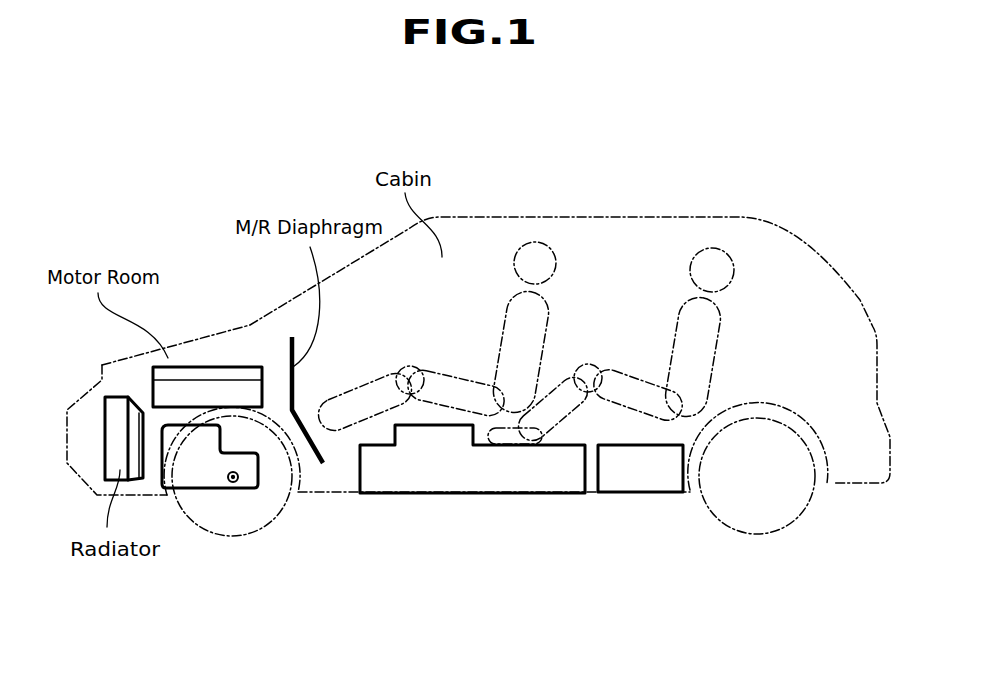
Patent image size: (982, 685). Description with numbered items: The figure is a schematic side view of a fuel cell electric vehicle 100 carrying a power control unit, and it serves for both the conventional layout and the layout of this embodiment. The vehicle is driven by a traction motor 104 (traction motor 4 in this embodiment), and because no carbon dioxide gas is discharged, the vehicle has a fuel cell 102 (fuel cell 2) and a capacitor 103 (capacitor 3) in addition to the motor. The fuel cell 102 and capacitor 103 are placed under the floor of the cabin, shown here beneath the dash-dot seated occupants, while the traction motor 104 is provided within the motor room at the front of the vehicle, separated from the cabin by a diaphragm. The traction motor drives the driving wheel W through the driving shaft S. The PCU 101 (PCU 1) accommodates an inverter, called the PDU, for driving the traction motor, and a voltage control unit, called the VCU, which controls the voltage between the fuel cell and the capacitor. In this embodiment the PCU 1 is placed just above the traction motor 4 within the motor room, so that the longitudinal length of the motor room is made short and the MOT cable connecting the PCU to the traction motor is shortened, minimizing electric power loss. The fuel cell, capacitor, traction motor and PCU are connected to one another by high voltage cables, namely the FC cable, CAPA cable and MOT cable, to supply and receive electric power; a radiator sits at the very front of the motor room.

The fuel cell electric vehicle 100 is at (595, 217).
The PCU (Power Control Unit) 1 is at (207, 338).
The PCU 101 is at (207, 390).
The fuel cell 2 is at (516, 489).
The fuel cell 102 is at (520, 473).
The capacitor 3 is at (670, 520).
The capacitor 103 is at (662, 480).
The traction motor 4 is at (196, 531).
The traction motor 104 is at (215, 470).
The driving shaft S is at (240, 478).
The driving wheel W is at (263, 533).